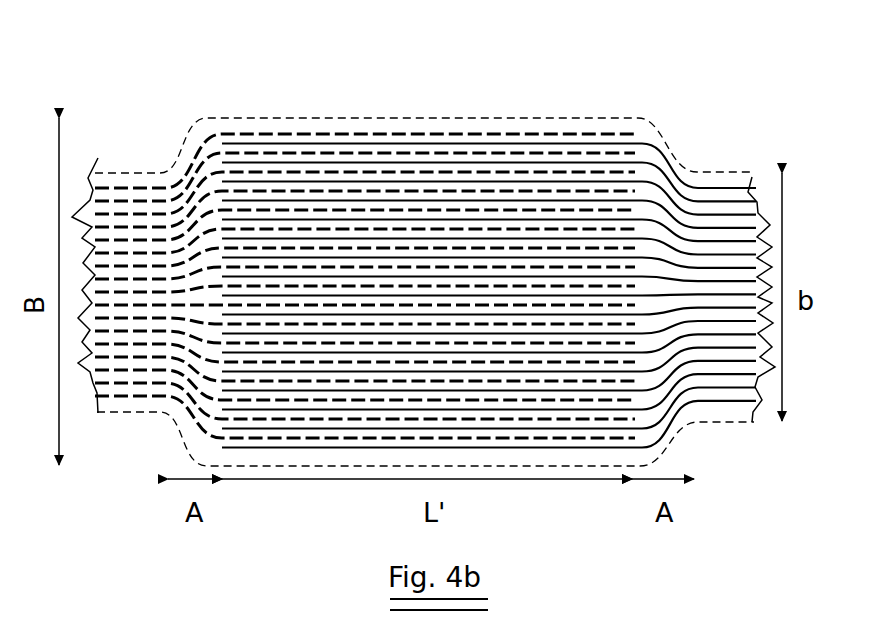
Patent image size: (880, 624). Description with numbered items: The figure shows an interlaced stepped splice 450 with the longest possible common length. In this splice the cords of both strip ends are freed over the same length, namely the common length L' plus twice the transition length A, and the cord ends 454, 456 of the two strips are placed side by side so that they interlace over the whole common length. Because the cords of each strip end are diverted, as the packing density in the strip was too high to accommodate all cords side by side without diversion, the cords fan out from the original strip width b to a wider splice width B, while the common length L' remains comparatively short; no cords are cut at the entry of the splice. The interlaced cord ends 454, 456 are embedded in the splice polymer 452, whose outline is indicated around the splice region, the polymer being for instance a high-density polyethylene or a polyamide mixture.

The interlaced stepped splice 450 is at (180, 78).
The splice polymer 452 is at (602, 118).
The cord ends of first strip end 454 is at (243, 134).
The cord ends of second strip end 456 is at (395, 143).